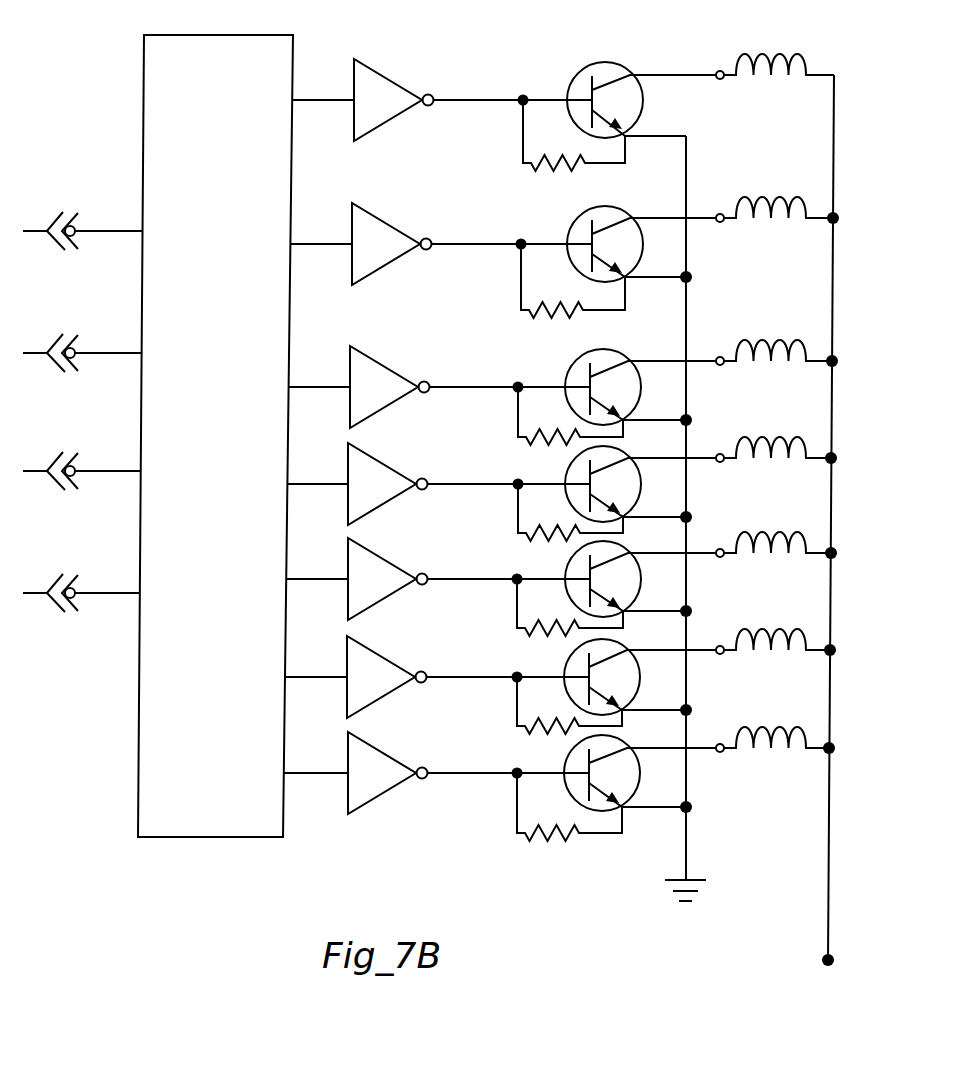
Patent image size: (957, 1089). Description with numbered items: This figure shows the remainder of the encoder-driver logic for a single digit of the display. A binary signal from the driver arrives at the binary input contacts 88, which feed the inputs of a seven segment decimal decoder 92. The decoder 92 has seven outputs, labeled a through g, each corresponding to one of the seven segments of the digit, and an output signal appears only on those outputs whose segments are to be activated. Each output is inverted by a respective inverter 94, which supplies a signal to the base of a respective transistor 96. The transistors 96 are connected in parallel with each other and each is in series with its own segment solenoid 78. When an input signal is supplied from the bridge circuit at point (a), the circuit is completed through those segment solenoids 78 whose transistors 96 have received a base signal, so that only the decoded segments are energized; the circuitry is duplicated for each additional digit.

The segment solenoid 78 is at (796, 56).
The binary input contacts 88 is at (63, 213).
The seven segment decimal decoder 92 is at (241, 459).
The inverter 94 is at (432, 64).
The transistor 96 is at (578, 81).